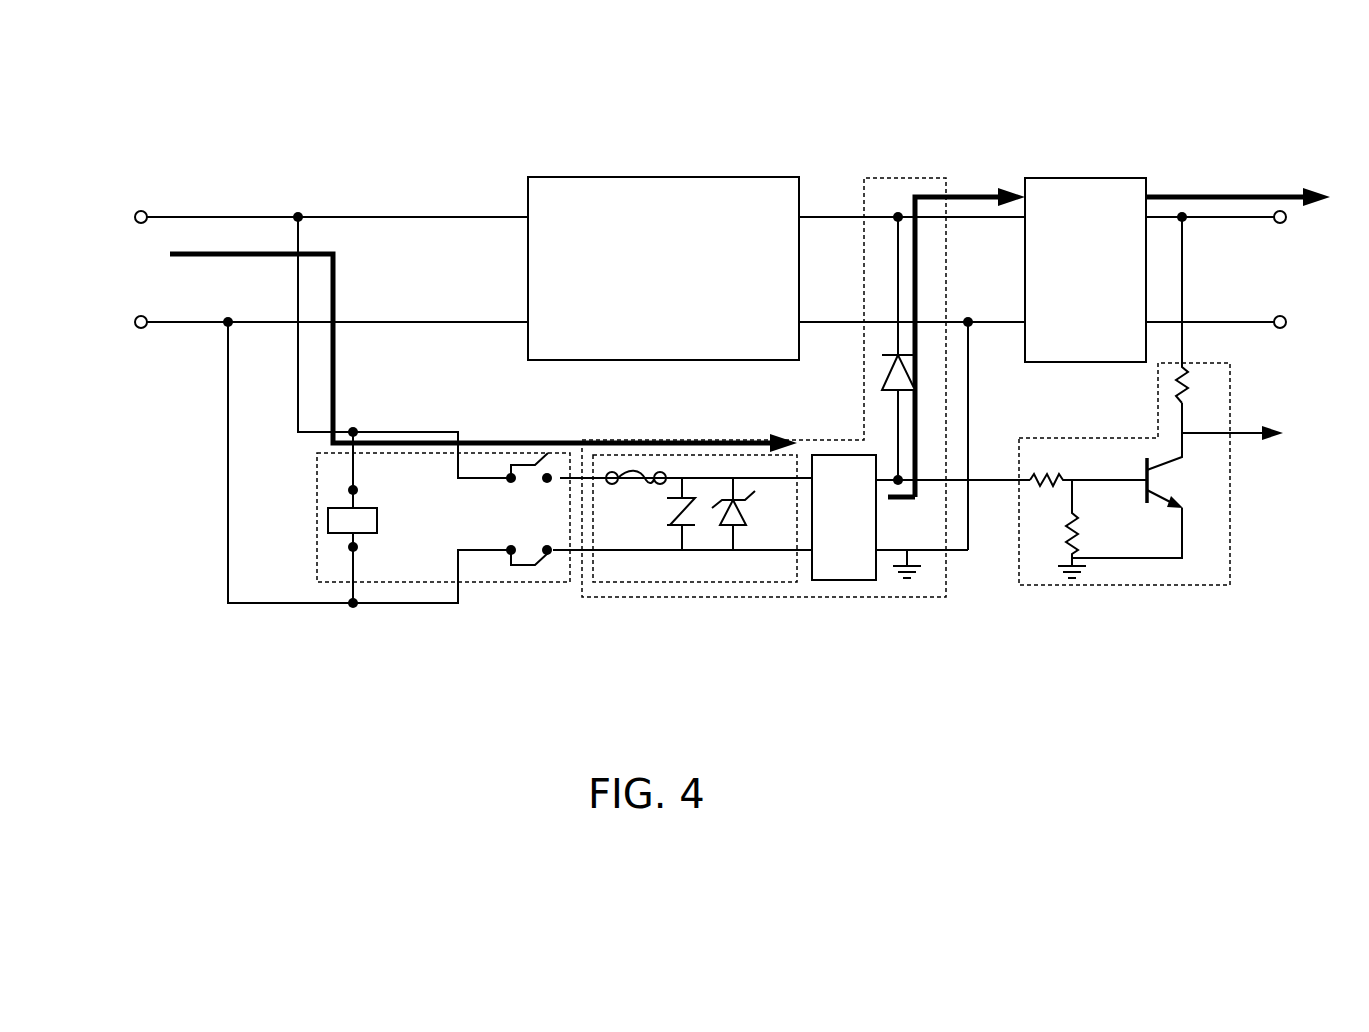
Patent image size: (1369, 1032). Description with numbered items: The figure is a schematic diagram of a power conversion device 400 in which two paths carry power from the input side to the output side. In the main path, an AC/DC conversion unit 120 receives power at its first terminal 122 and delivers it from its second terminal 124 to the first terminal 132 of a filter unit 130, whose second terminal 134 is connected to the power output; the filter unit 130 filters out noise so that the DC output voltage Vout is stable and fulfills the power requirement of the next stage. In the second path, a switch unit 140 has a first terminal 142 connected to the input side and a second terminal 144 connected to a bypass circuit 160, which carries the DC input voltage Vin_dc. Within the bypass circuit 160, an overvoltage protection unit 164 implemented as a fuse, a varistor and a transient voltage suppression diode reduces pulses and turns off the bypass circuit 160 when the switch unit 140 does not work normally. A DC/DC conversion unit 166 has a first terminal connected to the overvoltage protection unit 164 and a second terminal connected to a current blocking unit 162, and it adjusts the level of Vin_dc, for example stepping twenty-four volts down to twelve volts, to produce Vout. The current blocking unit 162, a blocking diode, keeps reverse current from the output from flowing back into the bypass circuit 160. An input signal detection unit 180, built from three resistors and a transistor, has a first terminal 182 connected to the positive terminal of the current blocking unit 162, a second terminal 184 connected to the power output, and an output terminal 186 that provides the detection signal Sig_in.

The power conversion device 400 is at (1118, 839).
The AC/DC conversion unit 120 is at (686, 282).
The first terminal of the AC/DC conversion unit 122 is at (527, 218).
The second terminal of the AC/DC conversion unit 124 is at (800, 216).
The filter unit 130 is at (1106, 282).
The first terminal of the filter unit 132 is at (1024, 219).
The second terminal of the filter unit 134 is at (1150, 216).
The switch unit 140 is at (520, 440).
The first terminal of the switch unit 142 is at (350, 458).
The second terminal of the switch unit 144 is at (572, 478).
The bypass circuit 160 is at (806, 420).
The current blocking unit 162 is at (882, 382).
The overvoltage protection unit 164 is at (707, 584).
The DC/DC conversion unit 166 is at (866, 531).
The input signal detection unit 180 is at (1157, 433).
The first terminal of the input signal detection unit 182 is at (1019, 496).
The second terminal of the input signal detection unit 184 is at (1185, 345).
The output terminal of the input signal detection unit 186 is at (1233, 437).